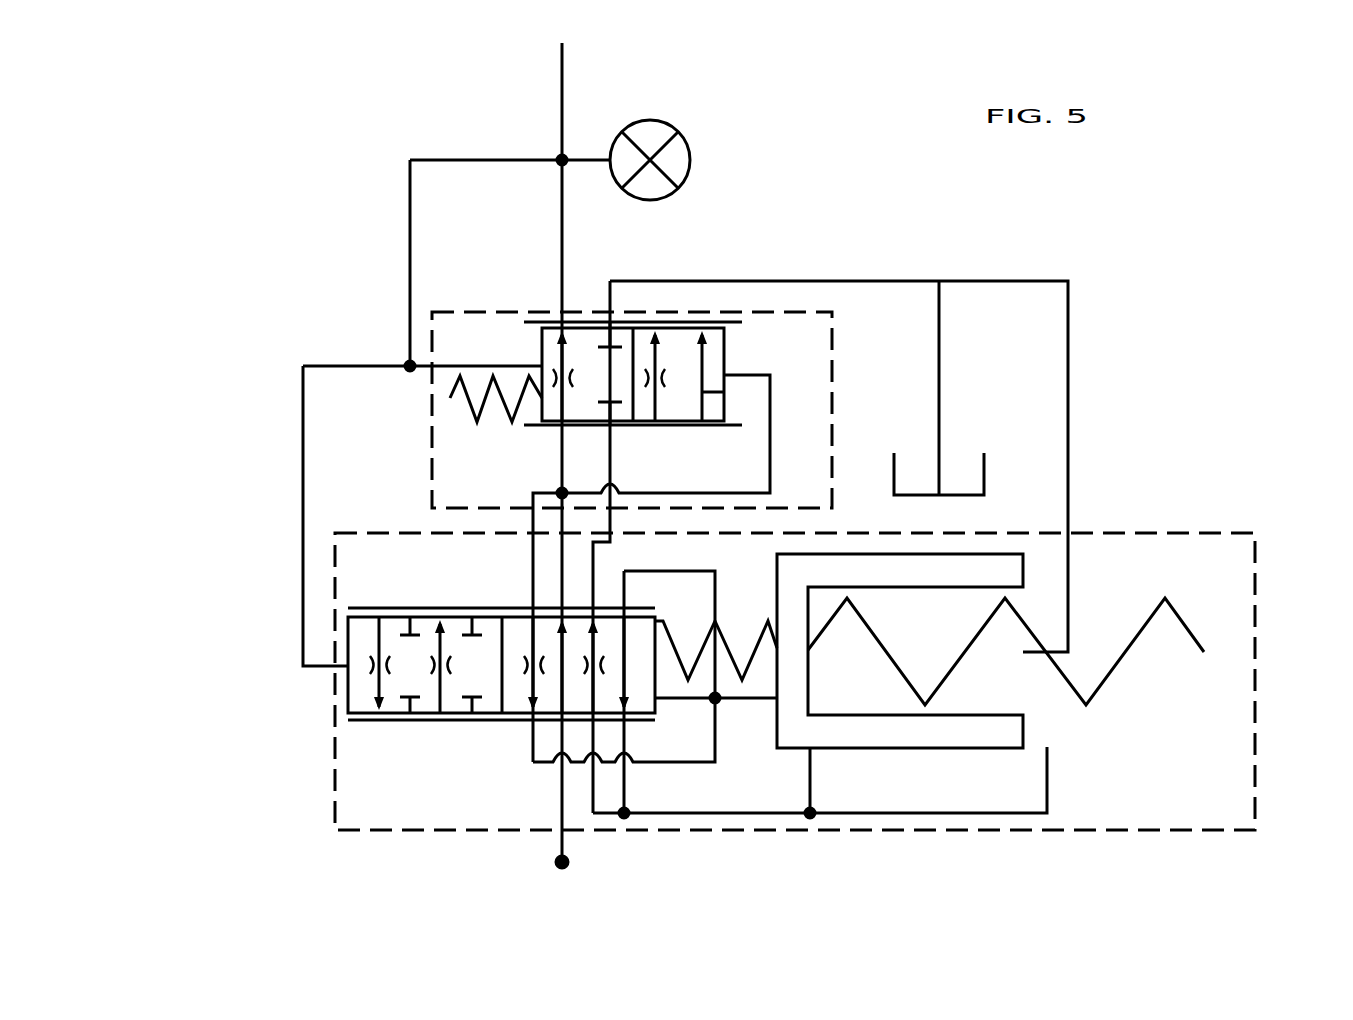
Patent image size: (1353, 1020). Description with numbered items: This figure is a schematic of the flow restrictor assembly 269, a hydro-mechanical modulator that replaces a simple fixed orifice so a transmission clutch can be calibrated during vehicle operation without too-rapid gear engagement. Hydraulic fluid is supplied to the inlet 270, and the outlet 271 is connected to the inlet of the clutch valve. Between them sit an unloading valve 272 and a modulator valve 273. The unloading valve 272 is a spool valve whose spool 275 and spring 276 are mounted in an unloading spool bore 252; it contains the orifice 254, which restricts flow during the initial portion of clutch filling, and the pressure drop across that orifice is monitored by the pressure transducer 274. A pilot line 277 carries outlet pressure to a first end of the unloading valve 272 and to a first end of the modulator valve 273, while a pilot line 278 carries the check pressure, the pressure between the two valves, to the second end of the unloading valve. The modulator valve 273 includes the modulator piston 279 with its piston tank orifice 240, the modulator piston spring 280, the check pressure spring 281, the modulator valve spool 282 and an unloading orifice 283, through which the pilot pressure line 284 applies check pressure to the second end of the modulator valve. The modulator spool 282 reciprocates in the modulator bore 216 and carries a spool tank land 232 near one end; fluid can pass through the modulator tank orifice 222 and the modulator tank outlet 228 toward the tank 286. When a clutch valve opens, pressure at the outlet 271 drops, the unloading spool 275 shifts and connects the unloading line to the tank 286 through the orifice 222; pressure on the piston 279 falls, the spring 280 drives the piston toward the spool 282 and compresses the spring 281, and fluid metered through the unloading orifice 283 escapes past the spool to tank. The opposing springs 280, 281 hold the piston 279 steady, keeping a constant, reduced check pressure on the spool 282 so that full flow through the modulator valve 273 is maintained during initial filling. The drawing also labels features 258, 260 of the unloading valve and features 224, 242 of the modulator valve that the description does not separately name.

The modulator bore 216 is at (380, 722).
The modulator tank orifice 222 is at (608, 663).
The valve port 224 is at (560, 703).
The modulator tank outlet 228 is at (632, 724).
The spool tank land 232 is at (626, 608).
The piston tank orifice 240 is at (1050, 745).
The solenoid 242 is at (818, 752).
The unloading spool bore 252 is at (633, 425).
The orifice 254 is at (572, 378).
The valve port 258 is at (724, 392).
The valve port 260 is at (703, 418).
The flow restrictor assembly 269 is at (258, 505).
The inlet 270 is at (566, 838).
The outlet 271 is at (565, 236).
The unloading valve 272 is at (832, 345).
The modulator valve 273 is at (1255, 642).
The pressure transducer 274 is at (690, 160).
The unloading valve spool 275 is at (725, 355).
The spring 276 is at (500, 410).
The pilot line 277 is at (303, 410).
The pilot line 278 is at (770, 440).
The modulator piston 279 is at (937, 748).
The modulator piston spring 280 is at (1123, 657).
The check pressure spring 281 is at (730, 645).
The modulator valve spool 282 is at (345, 695).
The unloading orifice 283 is at (515, 666).
The pilot pressure line 284 is at (717, 730).
The tank 286 is at (984, 480).